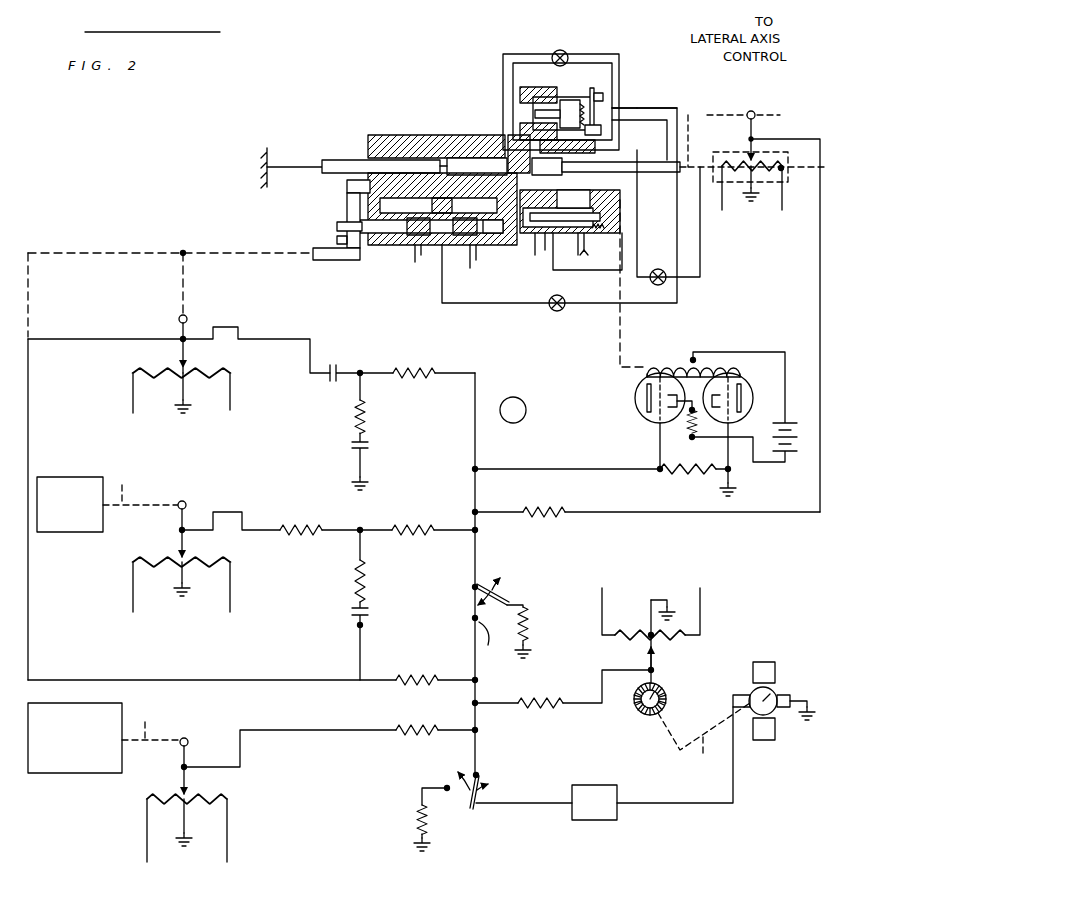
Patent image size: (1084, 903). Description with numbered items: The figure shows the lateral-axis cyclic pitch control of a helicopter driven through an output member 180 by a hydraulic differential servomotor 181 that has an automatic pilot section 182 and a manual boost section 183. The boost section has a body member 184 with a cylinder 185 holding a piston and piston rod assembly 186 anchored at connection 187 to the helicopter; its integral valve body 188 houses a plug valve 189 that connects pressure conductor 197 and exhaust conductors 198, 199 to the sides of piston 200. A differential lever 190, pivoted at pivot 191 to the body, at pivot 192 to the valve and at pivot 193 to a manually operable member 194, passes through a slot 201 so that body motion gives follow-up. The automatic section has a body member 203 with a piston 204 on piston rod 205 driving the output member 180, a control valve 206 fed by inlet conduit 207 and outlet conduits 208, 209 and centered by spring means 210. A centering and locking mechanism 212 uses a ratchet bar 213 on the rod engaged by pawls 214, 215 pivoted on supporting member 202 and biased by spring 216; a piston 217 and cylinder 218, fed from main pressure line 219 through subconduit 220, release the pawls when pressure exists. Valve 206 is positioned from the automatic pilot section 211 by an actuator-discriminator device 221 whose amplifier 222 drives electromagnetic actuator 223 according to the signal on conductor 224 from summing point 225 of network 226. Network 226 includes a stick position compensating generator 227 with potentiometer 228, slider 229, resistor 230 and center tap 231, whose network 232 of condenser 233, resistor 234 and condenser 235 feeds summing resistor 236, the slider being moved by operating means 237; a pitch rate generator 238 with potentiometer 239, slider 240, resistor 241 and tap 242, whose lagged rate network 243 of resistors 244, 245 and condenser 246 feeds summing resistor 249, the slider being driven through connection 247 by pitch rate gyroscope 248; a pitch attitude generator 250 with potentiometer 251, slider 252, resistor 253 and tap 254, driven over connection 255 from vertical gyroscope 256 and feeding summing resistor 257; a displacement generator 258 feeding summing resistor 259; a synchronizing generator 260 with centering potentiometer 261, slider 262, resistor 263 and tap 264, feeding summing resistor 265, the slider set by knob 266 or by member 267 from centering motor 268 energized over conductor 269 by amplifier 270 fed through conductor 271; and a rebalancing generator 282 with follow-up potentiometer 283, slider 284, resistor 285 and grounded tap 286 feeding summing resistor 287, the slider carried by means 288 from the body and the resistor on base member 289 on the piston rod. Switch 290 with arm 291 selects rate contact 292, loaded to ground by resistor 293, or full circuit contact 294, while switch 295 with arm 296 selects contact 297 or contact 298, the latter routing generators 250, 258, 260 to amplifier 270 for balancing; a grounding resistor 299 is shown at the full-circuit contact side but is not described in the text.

The output member 180 is at (765, 161).
The hydraulic differential type servomotor 181 is at (480, 53).
The automatic pilot section 182 is at (596, 47).
The manual or boost section 183 is at (415, 130).
The body member 184 is at (446, 135).
The cylinder 185 is at (478, 158).
The piston and piston rod assembly 186 is at (356, 160).
The connection 187 is at (263, 180).
The valve body 188 is at (385, 246).
The slidable plug type valve 189 is at (500, 240).
The differential lever 190 is at (347, 210).
The pivot 191 is at (347, 187).
The pivot 192 is at (337, 227).
The pivot 193 is at (355, 258).
The manually operable member 194 is at (262, 252).
The hydraulic pressure input fluid conductor 197 is at (442, 300).
The fluid exhaust conductor 198 is at (418, 245).
The fluid exhaust conductor 199 is at (468, 245).
The piston 200 is at (477, 166).
The slot 201 is at (325, 253).
The supporting member 202 is at (540, 75).
The body member 203 is at (620, 192).
The piston 204 is at (606, 166).
The piston rod 205 is at (640, 170).
The slidable control valve 206 is at (605, 218).
The fluid pressure inlet conduit 207 is at (553, 270).
The outlet conduit 208 is at (540, 248).
The outlet conduit 209 is at (580, 252).
The spring centering means 210 is at (586, 240).
The automatic pilot section 211 is at (514, 410).
The centering and locking mechanism 212 is at (633, 83).
The ratchet bar 213 is at (650, 108).
The pawl 214 is at (576, 100).
The pawl 215 is at (600, 128).
The spring 216 is at (533, 112).
The piston 217 is at (595, 92).
The cylinder 218 is at (600, 105).
The main pressure line 219 is at (690, 277).
The subconduit 220 is at (648, 272).
The electromagnetic actuator-discriminator amplifier device 221 is at (800, 343).
The amplifier section 222 is at (648, 432).
The electromagnetic actuator 223 is at (612, 382).
The conductor 224 is at (605, 470).
The summing point 225 is at (477, 468).
The parallel summing variable impedance network 226 is at (435, 453).
The control stick position compensating signal generator 227 is at (298, 413).
The stick position potentiometer 228 is at (165, 351).
The slider 229 is at (186, 345).
The resistor 230 is at (196, 380).
The center tap 231 is at (176, 400).
The network 232 is at (297, 426).
The condenser 233 is at (336, 368).
The resistor 234 is at (364, 415).
The condenser 235 is at (352, 445).
The summing resistor 236 is at (437, 372).
The operating means 237 is at (186, 300).
The craft pitch rate signal generator 238 is at (303, 571).
The potentiometer 239 is at (163, 534).
The slider 240 is at (186, 503).
The resistor 241 is at (205, 560).
The center tap 242 is at (188, 583).
The integrating network or lagged rate network 243 is at (337, 548).
The resistor 244 is at (312, 528).
The resistor 245 is at (365, 570).
The condenser 246 is at (368, 612).
The operating connection 247 is at (123, 497).
The pitch rate gyroscope 248 is at (68, 477).
The summing resistor 249 is at (408, 528).
The pitch attitude signal generator 250 is at (308, 771).
The pitch attitude potentiometer 251 is at (176, 790).
The slider 252 is at (187, 740).
The resistor 253 is at (222, 797).
The center tap 254 is at (190, 835).
The connection 255 is at (145, 722).
The pitch attitude vertical gyroscope 256 is at (62, 773).
The summing resistor 257 is at (396, 728).
The stick position displacement signal generator 258 is at (308, 673).
The summing resistor 259 is at (412, 678).
The synchronizing signal generator 260 is at (755, 643).
The centering potentiometer 261 is at (633, 655).
The slider 262 is at (654, 655).
The resistor 263 is at (626, 633).
The center tap 264 is at (653, 600).
The summing resistor 265 is at (540, 706).
The manually operable knob 266 is at (642, 712).
The operating member 267 is at (700, 755).
The centering motor 268 is at (779, 687).
The output conductor 269 is at (735, 795).
The centering motor amplifier 270 is at (620, 815).
The input conductor 271 is at (523, 805).
The rebalancing signal generator 282 is at (786, 109).
The follow-up potentiometer 283 is at (740, 137).
The slider 284 is at (757, 127).
The resistor 285 is at (735, 162).
The grounded center tap 286 is at (745, 200).
The summing resistor 287 is at (543, 518).
The supporting means 288 is at (710, 115).
The base member 289 is at (782, 175).
The manually operable two position switch 290 is at (488, 582).
The single pole double throw switch arm 291 is at (472, 595).
The rate contact 292 is at (500, 592).
The loading resistor 293 is at (529, 625).
The full autopilot circuit contact 294 is at (473, 620).
The single pole double throw switch 295 is at (484, 784).
The manually operable switch arm 296 is at (466, 772).
The contact 297 is at (447, 788).
The contact 298 is at (478, 810).
The resistor 299 is at (420, 824).